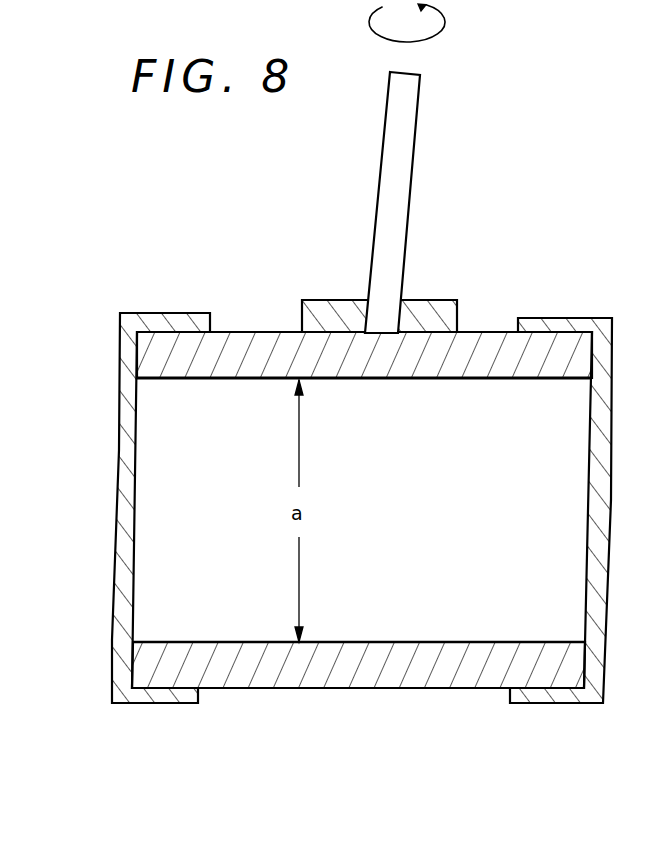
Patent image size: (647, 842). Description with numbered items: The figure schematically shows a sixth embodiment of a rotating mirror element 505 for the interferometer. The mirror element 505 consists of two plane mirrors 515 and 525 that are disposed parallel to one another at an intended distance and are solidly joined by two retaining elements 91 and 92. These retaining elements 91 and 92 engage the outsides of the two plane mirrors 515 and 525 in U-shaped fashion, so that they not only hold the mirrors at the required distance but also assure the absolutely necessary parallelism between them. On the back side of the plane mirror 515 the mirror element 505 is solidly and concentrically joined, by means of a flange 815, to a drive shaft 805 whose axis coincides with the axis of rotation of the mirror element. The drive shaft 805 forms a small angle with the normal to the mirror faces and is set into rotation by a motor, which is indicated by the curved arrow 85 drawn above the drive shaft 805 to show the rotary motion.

The rotation drive of shaft 85 is at (412, 72).
The drive shaft 805 is at (393, 232).
The flange 815 is at (310, 298).
The plane mirror 515 is at (545, 345).
The mirror element 505 is at (362, 504).
The plane mirror 525 is at (210, 668).
The retaining element 91 is at (137, 525).
The retaining element 92 is at (590, 513).